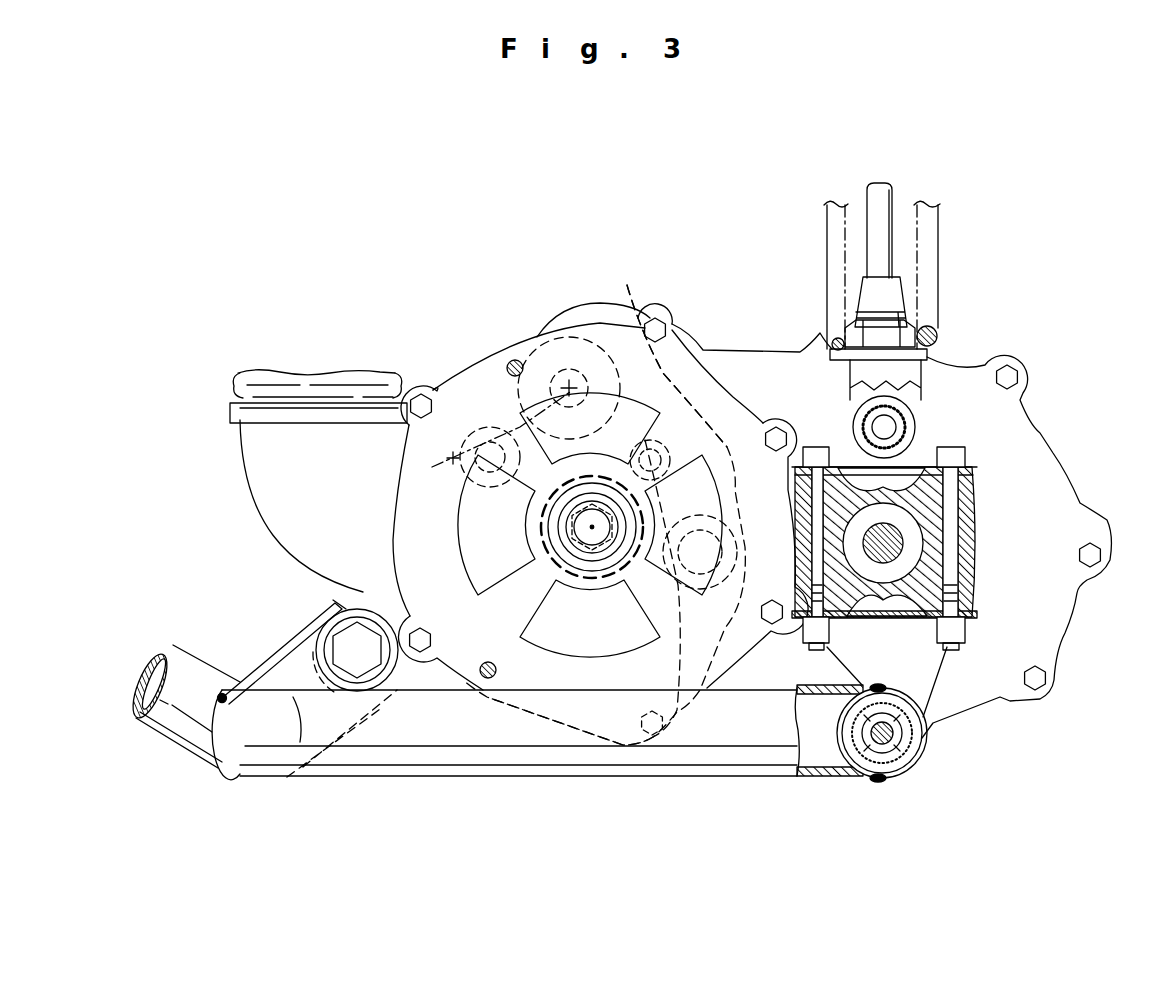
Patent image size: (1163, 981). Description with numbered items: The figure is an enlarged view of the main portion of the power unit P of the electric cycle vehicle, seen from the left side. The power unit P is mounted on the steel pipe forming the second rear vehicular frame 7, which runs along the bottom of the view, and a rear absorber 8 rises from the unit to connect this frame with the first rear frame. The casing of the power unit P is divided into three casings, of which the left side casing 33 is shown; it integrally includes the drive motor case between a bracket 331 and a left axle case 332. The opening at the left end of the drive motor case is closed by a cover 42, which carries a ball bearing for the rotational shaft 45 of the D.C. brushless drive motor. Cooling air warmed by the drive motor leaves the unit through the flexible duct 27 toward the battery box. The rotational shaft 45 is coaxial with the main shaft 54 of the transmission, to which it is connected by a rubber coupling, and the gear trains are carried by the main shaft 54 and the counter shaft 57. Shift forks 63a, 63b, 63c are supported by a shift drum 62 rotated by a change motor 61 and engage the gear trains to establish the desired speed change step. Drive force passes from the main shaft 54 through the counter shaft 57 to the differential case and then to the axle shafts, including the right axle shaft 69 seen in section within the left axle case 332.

The second rear vehicular frame 7 is at (502, 778).
The rear absorber 8 is at (895, 206).
The flexible duct 27 is at (318, 372).
The left side casing 33 is at (1017, 488).
The bracket 331 is at (385, 592).
The left axle case 332 is at (968, 532).
The cover 42 is at (462, 385).
The rotational shaft 45 is at (588, 542).
The main shaft 54 is at (577, 532).
The counter shaft 57 is at (780, 607).
The change motor 61 is at (536, 450).
The shift drum 62 is at (569, 376).
The shift fork 63a is at (627, 300).
The shift fork 63b is at (597, 592).
The shift fork 63c is at (677, 366).
The right axle shaft 69 is at (893, 547).
The power unit P is at (735, 340).